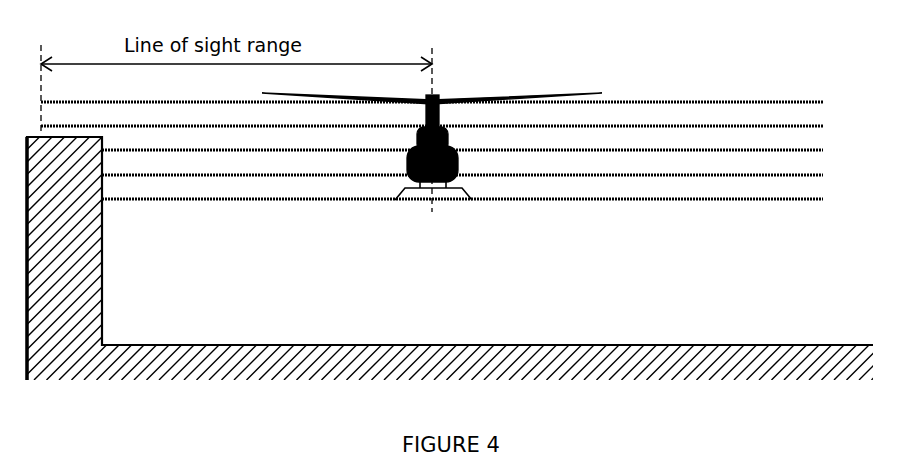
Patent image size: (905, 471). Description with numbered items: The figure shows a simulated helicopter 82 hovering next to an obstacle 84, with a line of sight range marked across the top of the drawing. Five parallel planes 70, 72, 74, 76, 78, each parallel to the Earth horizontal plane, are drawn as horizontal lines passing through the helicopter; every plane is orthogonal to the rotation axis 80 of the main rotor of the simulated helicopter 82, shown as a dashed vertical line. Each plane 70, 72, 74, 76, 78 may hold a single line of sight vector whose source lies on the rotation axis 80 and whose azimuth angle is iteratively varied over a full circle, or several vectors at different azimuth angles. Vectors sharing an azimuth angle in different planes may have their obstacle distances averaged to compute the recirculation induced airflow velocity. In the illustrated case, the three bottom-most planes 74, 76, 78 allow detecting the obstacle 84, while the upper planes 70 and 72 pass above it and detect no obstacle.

The first parallel plane 70 is at (658, 102).
The second parallel plane 72 is at (702, 126).
The third parallel plane 74 is at (720, 150).
The fourth parallel plane 76 is at (792, 175).
The fifth parallel plane 78 is at (710, 199).
The rotation axis 80 is at (433, 77).
The simulated helicopter 82 is at (453, 178).
The obstacle 84 is at (100, 228).